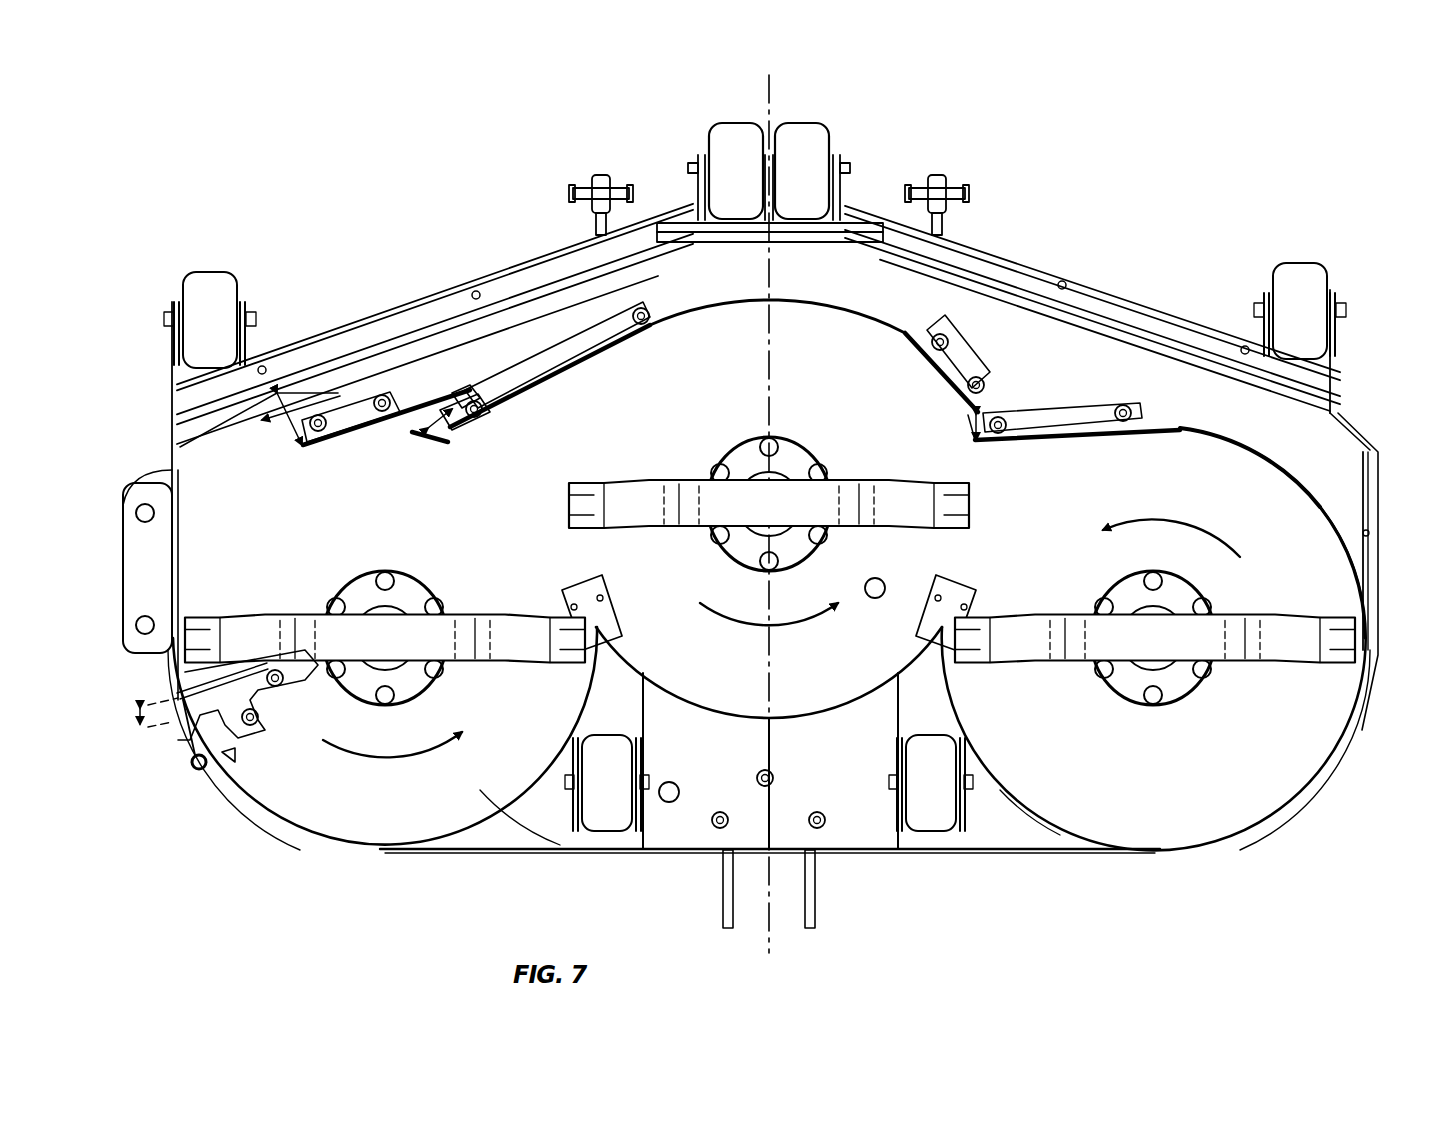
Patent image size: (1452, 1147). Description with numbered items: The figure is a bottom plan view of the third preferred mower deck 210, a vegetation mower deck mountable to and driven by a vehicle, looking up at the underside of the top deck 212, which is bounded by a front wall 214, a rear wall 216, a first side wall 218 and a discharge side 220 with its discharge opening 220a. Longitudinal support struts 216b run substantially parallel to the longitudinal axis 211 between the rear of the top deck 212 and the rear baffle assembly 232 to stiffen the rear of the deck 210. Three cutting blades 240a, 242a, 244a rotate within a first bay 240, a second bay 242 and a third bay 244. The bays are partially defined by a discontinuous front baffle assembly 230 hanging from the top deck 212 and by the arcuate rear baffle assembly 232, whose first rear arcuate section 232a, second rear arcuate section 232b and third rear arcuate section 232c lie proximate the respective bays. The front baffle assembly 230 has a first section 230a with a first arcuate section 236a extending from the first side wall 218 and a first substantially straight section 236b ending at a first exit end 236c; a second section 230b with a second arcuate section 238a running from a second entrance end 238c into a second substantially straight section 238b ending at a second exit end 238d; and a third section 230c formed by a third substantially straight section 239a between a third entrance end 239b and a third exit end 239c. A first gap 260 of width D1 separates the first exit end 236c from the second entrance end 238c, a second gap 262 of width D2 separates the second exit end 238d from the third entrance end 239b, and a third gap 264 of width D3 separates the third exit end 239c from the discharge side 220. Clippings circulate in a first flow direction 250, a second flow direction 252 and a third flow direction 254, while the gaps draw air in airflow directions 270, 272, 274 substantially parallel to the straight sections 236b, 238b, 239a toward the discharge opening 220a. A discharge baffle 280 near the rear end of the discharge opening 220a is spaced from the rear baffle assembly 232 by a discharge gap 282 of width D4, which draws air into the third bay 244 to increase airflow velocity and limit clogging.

The mower deck 210 is at (1158, 122).
The longitudinal axis 211 is at (772, 97).
The top deck 212 is at (1020, 270).
The front wall 214 is at (508, 262).
The rear wall 216 is at (1062, 855).
The longitudinal support struts 216b is at (773, 823).
The first side wall 218 is at (1375, 508).
The discharge side 220 is at (172, 430).
The discharge opening 220a is at (155, 535).
The front baffle assembly 230 is at (1372, 452).
The first section 230a is at (1150, 428).
The second section 230b is at (793, 317).
The third section 230c is at (350, 395).
The rear baffle assembly 232 is at (1010, 812).
The first rear arcuate section 232a is at (995, 790).
The second rear arcuate section 232b is at (700, 712).
The third rear arcuate section 232c is at (516, 812).
The first arcuate section 236a is at (1345, 560).
The first substantially straight section 236b is at (1160, 428).
The first exit end 236c is at (975, 450).
The second arcuate section 238a is at (927, 316).
The second substantially straight section 238b is at (600, 368).
The second entrance end 238c is at (1000, 405).
The second exit end 238d is at (447, 448).
The third substantially straight section 239a is at (455, 335).
The third entrance end 239b is at (470, 395).
The third exit end 239c is at (300, 462).
The first bay 240 is at (1255, 765).
The first cutting blade 240a is at (1015, 648).
The second bay 242 is at (815, 672).
The second cutting blade 242a is at (650, 528).
The third bay 244 is at (262, 800).
The third cutting blade 244a is at (522, 618).
The first flow direction 250 is at (1165, 515).
The second flow direction 252 is at (748, 625).
The third flow direction 254 is at (392, 760).
The first gap 260 is at (960, 408).
The second gap 262 is at (385, 420).
The third gap 264 is at (292, 392).
The airflow direction 270 is at (1040, 408).
The airflow direction 272 is at (560, 400).
The airflow direction 274 is at (330, 400).
The discharge baffle 280 is at (190, 690).
The discharge gap 282 is at (175, 722).
The first gap width D1 is at (965, 435).
The second gap width D2 is at (468, 432).
The third gap width D3 is at (275, 440).
The discharge gap width D4 is at (141, 720).